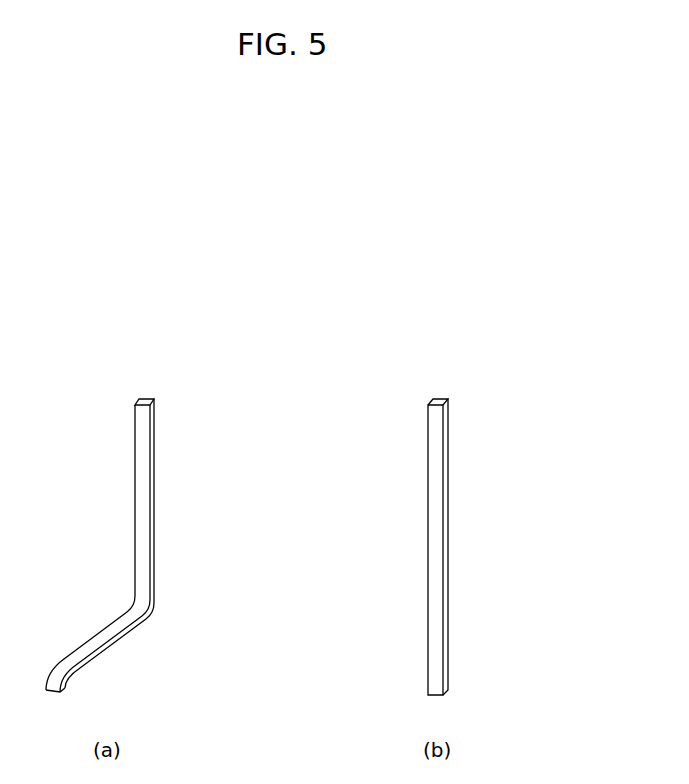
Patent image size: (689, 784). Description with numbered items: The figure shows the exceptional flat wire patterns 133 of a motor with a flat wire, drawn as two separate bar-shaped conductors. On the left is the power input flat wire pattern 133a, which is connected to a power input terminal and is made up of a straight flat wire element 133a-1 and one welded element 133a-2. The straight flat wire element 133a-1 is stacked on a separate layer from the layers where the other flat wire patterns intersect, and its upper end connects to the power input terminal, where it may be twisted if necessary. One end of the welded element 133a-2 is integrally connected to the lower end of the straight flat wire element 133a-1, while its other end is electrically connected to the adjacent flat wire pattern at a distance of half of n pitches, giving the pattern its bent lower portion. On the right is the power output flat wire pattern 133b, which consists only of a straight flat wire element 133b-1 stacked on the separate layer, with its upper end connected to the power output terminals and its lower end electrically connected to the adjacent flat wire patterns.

The exceptional flat wire patterns 133 is at (526, 298).
The power input flat wire pattern 133a is at (88, 391).
The straight flat wire element 133a-1 is at (147, 490).
The welded element 133a-2 is at (62, 667).
The power output flat wire pattern 133b is at (383, 393).
The straight flat wire element 133b-1 is at (440, 532).